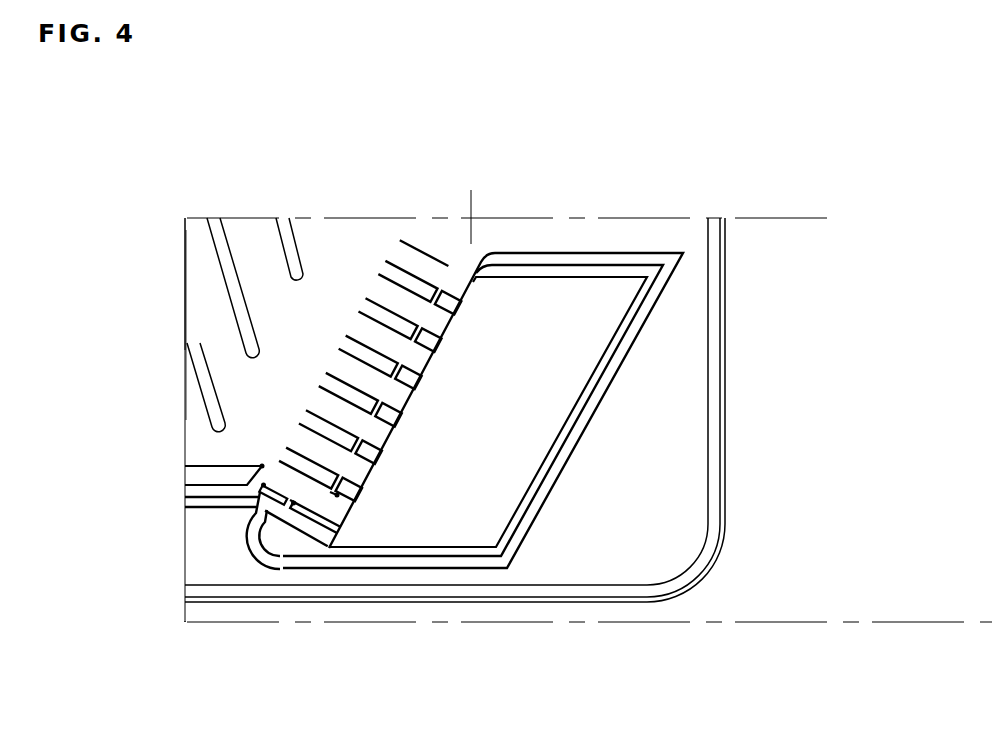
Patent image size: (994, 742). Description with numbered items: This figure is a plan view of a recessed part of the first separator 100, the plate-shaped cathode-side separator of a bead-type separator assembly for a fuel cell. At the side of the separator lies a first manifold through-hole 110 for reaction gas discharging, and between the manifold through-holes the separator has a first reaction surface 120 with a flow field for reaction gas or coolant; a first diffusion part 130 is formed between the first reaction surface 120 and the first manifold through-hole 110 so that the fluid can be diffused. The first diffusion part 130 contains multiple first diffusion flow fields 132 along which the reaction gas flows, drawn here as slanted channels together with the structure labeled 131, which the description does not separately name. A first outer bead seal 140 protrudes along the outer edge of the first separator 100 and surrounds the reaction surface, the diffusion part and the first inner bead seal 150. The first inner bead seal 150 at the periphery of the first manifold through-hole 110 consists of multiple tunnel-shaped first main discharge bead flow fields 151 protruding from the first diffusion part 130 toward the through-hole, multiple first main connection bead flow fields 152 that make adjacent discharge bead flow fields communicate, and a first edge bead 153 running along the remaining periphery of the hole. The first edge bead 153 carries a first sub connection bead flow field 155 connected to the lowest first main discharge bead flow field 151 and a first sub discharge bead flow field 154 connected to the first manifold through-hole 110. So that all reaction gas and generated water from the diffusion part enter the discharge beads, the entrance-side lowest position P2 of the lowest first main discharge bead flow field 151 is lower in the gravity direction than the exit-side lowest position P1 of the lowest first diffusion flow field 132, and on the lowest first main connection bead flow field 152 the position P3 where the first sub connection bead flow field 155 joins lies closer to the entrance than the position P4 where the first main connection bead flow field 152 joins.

The first separator 100 is at (207, 182).
The first manifold through-hole 110 is at (501, 458).
The first reaction surface 120 is at (471, 208).
The first diffusion part 130 is at (471, 244).
The slit 131 is at (238, 312).
The first diffusion flow field 132 is at (201, 272).
The first outer bead seal 140 is at (716, 355).
The first inner bead seal 150 is at (435, 378).
The first main discharge bead flow field 151 is at (376, 292).
The first main connection bead flow field 152 is at (432, 343).
The first edge bead 153 is at (587, 409).
The first sub discharge bead flow field 154 is at (315, 533).
The first sub connection bead flow field 155 is at (272, 568).
The exit-side lowest position P1 is at (262, 466).
The entrance-side lowest position P2 is at (264, 486).
The connection position of the first sub connection bead flow field P3 is at (293, 503).
The connection position of the first main connection bead flow field P4 is at (337, 495).